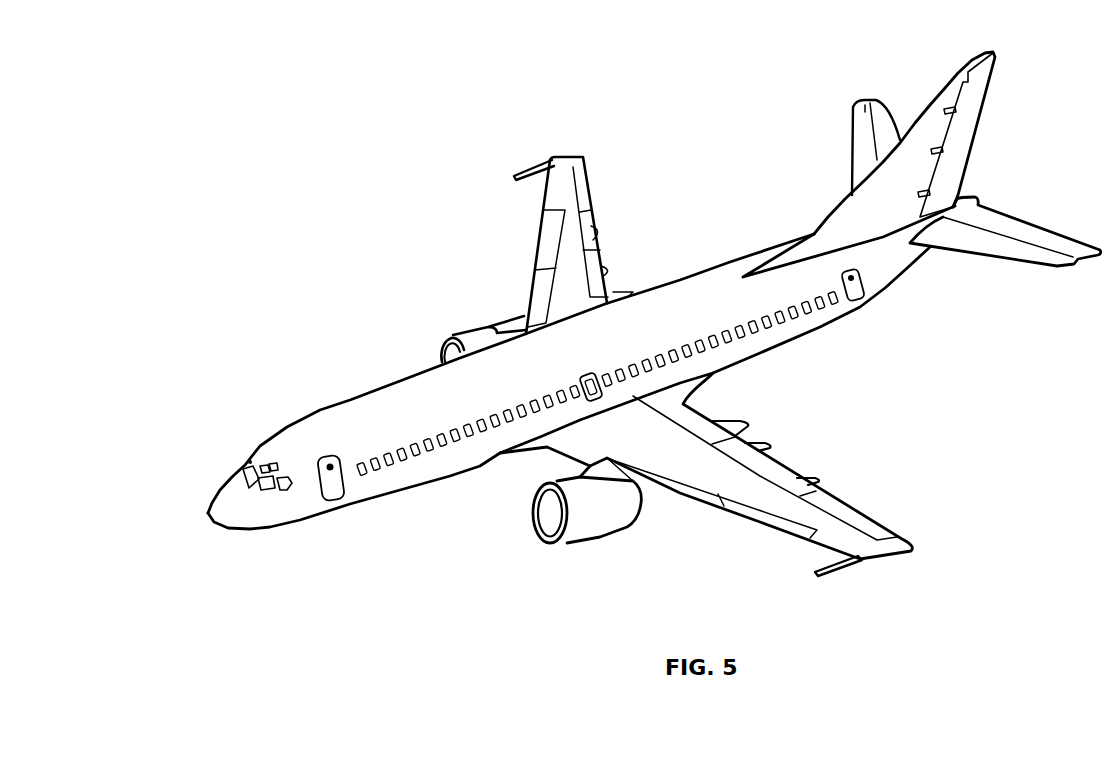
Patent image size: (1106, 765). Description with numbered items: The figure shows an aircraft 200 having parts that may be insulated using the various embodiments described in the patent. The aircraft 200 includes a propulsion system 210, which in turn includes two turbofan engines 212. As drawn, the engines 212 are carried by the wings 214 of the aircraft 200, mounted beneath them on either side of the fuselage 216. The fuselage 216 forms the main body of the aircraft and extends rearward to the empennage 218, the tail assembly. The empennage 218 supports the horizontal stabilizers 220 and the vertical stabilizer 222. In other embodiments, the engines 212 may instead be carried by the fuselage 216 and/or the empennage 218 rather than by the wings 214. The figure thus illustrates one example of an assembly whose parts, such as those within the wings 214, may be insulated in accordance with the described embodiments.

The aircraft 200 is at (396, 103).
The propulsion system 210 is at (520, 521).
The turbofan engines 212 is at (475, 338).
The wings 214 is at (560, 155).
The fuselage 216 is at (388, 482).
The empennage 218 is at (777, 215).
The horizontal stabilizers 220 is at (872, 105).
The vertical stabilizer 222 is at (957, 75).